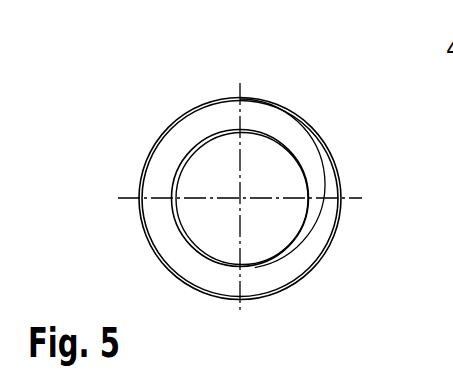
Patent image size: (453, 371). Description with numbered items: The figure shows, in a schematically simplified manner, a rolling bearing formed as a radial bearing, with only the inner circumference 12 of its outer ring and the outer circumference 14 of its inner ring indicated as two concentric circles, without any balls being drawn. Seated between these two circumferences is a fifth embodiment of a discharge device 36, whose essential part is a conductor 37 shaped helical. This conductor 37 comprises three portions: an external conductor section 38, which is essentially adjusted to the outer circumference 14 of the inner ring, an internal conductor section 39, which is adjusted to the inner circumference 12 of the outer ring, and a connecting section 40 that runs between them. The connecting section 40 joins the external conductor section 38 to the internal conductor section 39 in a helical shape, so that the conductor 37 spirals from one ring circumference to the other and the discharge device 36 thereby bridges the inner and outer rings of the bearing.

The inner circumference 12 is at (154, 242).
The outer circumference 14 is at (305, 182).
The discharge device 36 is at (155, 100).
The conductor 37 is at (213, 100).
The external conductor section 38 is at (251, 96).
The internal conductor section 39 is at (178, 168).
The connecting section 40 is at (304, 240).